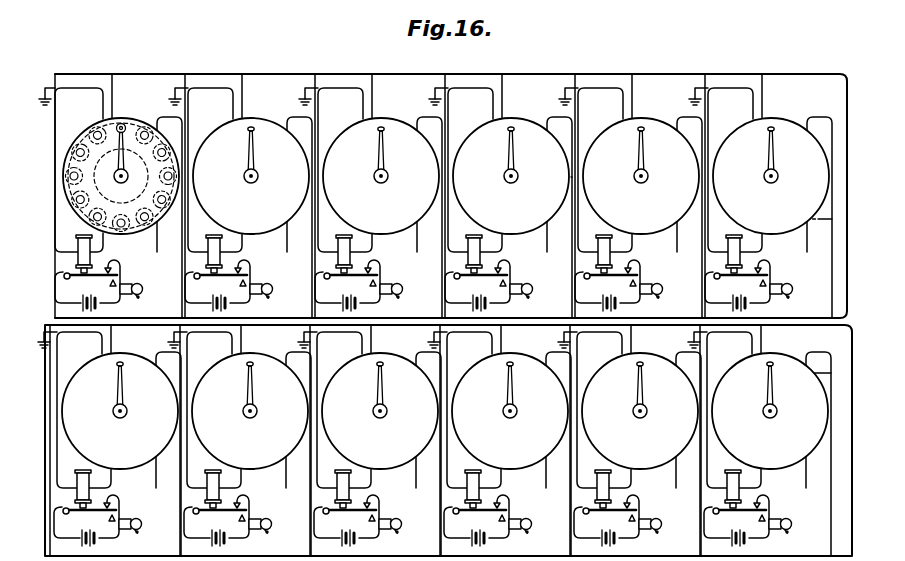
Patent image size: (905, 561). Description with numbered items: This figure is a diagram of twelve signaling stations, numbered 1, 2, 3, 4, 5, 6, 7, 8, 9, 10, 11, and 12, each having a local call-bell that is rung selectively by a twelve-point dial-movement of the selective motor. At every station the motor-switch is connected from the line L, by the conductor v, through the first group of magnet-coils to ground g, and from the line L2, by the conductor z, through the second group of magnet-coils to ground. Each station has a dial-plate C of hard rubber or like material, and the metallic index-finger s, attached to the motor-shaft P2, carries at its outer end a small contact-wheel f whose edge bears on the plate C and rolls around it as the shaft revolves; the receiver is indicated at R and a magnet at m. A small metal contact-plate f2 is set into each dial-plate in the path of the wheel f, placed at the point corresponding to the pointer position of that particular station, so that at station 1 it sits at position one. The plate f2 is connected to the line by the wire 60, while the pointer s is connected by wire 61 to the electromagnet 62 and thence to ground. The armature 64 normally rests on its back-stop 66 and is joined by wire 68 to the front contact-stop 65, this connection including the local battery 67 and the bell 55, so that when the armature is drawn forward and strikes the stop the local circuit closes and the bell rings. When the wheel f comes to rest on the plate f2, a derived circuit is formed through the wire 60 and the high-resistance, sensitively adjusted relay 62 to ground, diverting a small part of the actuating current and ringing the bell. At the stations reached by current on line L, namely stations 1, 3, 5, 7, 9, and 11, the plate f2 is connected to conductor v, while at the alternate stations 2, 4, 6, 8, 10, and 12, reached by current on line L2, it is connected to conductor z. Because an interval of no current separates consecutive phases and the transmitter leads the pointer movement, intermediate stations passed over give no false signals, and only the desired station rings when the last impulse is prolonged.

The station No. 1 is at (121, 176).
The station No. 2 is at (251, 176).
The station No. 3 is at (381, 176).
The station No. 4 is at (511, 176).
The station No. 5 is at (641, 176).
The station No. 6 is at (771, 176).
The station No. 7 is at (120, 411).
The station No. 8 is at (250, 411).
The station No. 9 is at (380, 411).
The station No. 10 is at (510, 411).
The station No. 11 is at (640, 411).
The station No. 12 is at (770, 411).
The bell 55 is at (138, 284).
The wire 60 is at (124, 121).
The wire 61 is at (121, 193).
The electromagnet 62 is at (84, 254).
The armature 64 is at (78, 283).
The front contact-stop 65 is at (110, 266).
The back-stop 66 is at (104, 288).
The local battery 67 is at (80, 304).
The wire 68 is at (102, 303).
The line L is at (448, 308).
The line L2 is at (543, 307).
The receiver R is at (294, 213).
The contact-wheel f is at (124, 125).
The contact-plate f2 is at (128, 126).
The ground g is at (45, 111).
The index-finger s is at (248, 158).
The magnet m is at (94, 174).
The motor-shaft P2 is at (138, 177).
The dial-plate C is at (140, 226).
The conductor z is at (497, 247).
The conductor v is at (253, 83).